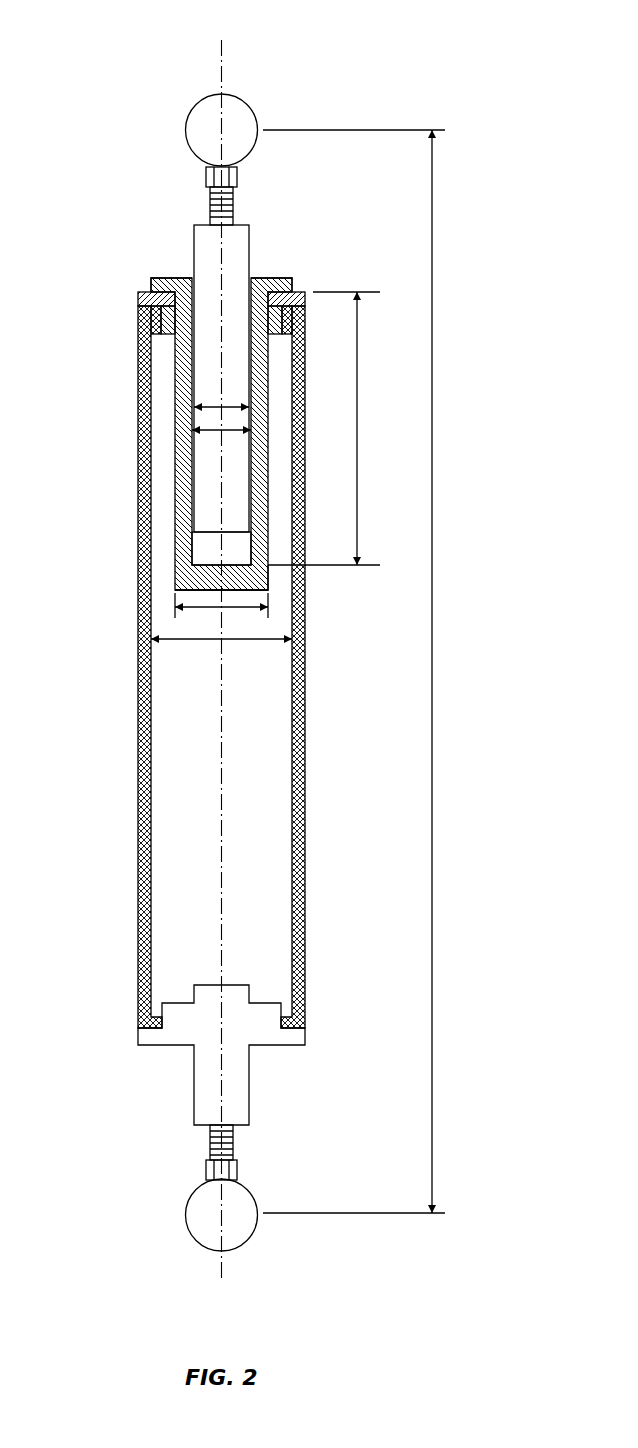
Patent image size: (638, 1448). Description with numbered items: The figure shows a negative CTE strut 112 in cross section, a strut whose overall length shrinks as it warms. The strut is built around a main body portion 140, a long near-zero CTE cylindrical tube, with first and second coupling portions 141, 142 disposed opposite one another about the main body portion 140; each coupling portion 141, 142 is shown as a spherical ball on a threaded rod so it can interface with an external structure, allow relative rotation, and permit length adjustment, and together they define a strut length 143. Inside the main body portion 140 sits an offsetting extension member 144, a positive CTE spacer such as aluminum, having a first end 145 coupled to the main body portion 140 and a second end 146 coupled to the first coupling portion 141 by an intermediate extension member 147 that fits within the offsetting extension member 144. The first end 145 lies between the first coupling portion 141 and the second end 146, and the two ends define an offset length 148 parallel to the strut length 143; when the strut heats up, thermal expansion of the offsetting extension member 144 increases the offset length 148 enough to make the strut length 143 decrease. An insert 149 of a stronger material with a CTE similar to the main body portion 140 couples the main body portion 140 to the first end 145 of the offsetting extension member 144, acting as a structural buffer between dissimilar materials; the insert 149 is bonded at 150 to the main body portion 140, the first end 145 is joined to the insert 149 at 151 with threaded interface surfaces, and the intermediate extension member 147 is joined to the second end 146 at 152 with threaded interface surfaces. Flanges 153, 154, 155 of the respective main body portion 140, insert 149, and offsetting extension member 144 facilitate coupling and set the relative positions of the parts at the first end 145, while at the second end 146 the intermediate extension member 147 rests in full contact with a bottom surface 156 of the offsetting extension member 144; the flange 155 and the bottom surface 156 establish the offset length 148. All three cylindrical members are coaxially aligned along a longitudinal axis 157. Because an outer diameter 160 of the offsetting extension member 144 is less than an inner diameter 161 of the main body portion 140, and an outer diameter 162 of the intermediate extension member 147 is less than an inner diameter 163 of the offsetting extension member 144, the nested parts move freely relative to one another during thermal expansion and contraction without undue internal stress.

The negative CTE strut 112 is at (172, 48).
The main body portion 140 is at (96, 542).
The first coupling portion 141 is at (165, 97).
The second coupling portion 142 is at (172, 1253).
The strut length 143 is at (433, 660).
The offsetting extension member 144 is at (176, 456).
The first end of offsetting extension member 145 is at (291, 268).
The second end of offsetting extension member 146 is at (275, 585).
The intermediate extension member 147 is at (198, 247).
The offset length 148 is at (358, 432).
The insert 149 is at (135, 299).
The bond 150 is at (294, 319).
The threaded interface 151 is at (301, 292).
The threaded interface 152 is at (186, 545).
The flange of main body portion 153 is at (157, 322).
The flange of insert 154 is at (139, 293).
The flange of offsetting extension member 155 is at (175, 279).
The bottom surface 156 is at (203, 571).
The longitudinal axis 157 is at (226, 76).
The outer diameter of offsetting extension member 160 is at (203, 610).
The inner diameter of main body portion 161 is at (200, 641).
The outer diameter of intermediate extension member 162 is at (194, 406).
The inner diameter of offsetting extension member 163 is at (192, 429).